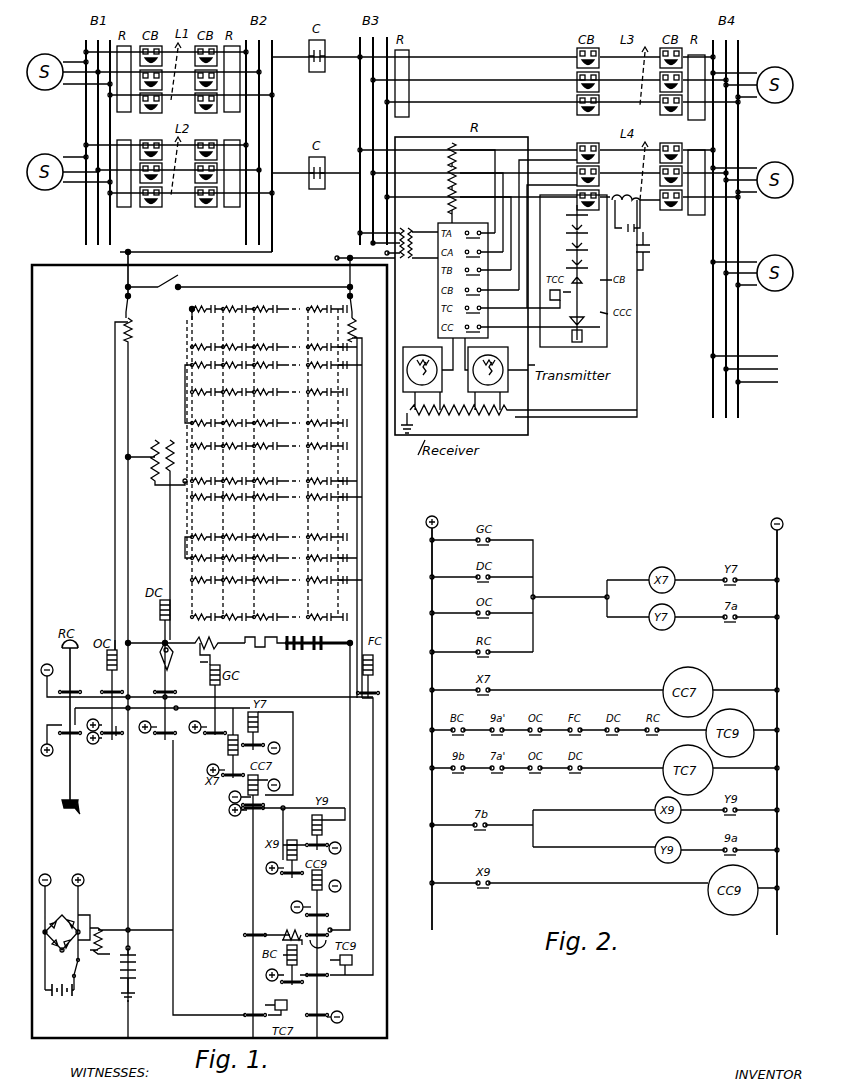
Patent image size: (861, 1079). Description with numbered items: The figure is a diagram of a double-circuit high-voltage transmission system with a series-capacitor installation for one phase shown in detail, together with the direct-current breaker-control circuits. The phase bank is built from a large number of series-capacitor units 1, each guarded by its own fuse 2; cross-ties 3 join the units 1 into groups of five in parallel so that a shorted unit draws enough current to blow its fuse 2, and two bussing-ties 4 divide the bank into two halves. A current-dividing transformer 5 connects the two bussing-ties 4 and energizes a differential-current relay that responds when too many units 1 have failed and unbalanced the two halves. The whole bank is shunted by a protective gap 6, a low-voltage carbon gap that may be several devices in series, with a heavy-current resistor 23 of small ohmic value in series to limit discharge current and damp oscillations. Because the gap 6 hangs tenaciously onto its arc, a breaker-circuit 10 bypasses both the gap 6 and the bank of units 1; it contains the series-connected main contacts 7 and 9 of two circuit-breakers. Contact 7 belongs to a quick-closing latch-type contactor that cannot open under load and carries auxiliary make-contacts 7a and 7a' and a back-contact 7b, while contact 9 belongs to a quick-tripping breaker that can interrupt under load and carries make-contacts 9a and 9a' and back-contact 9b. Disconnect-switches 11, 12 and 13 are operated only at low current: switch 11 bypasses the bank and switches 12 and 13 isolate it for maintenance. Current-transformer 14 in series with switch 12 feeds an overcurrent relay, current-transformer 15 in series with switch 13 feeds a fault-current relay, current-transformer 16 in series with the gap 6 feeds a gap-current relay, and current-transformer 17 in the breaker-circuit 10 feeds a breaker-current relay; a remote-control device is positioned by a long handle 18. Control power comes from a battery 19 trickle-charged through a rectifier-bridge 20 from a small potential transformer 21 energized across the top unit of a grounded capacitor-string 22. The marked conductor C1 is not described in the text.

The series-capacitor unit 1 is at (258, 308).
The fuse 2 is at (190, 304).
The cross-tie 3 is at (248, 326).
The bussing-tie 4 is at (175, 357).
The current-dividing transformer 5 is at (144, 454).
The protective gap 6 is at (302, 657).
The circuit-breaker main contact 7 is at (246, 935).
The make-contact 7a is at (230, 800).
The back-contact 7b is at (248, 817).
The make-contact 7a' is at (220, 878).
The circuit-breaker main contact 9 is at (325, 935).
The make-contact 9a is at (298, 898).
The make-contact 9a' is at (331, 984).
The back-contact 9b is at (327, 1020).
The breaker-circuit 10 is at (144, 930).
The disconnect-switch 11 is at (170, 278).
The disconnect-switch 12 is at (133, 302).
The disconnect-switch 13 is at (355, 302).
The current-transformer 14 is at (133, 330).
The current-transformer 15 is at (356, 330).
The current-transformer 16 is at (202, 644).
The current-transformer 17 is at (286, 928).
The long handle 18 is at (78, 814).
The battery 19 is at (68, 1000).
The rectifier-bridge 20 is at (66, 938).
The potential transformer 21 is at (100, 928).
The grounded capacitor-string 22 is at (139, 950).
The heavy-current resistor 23 is at (246, 653).
The conductor C1 is at (325, 273).